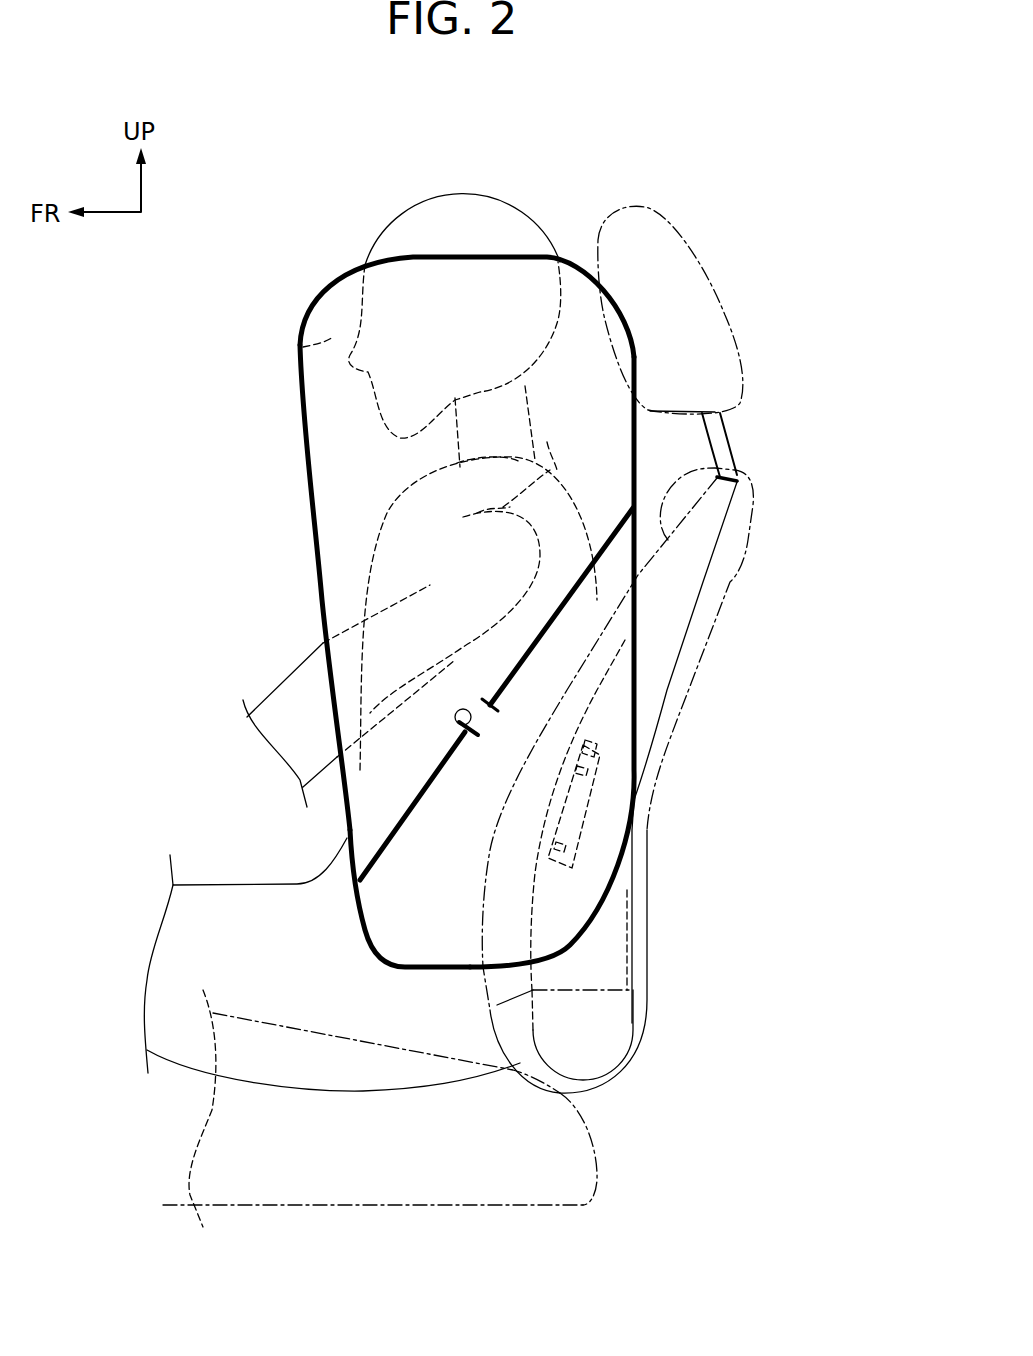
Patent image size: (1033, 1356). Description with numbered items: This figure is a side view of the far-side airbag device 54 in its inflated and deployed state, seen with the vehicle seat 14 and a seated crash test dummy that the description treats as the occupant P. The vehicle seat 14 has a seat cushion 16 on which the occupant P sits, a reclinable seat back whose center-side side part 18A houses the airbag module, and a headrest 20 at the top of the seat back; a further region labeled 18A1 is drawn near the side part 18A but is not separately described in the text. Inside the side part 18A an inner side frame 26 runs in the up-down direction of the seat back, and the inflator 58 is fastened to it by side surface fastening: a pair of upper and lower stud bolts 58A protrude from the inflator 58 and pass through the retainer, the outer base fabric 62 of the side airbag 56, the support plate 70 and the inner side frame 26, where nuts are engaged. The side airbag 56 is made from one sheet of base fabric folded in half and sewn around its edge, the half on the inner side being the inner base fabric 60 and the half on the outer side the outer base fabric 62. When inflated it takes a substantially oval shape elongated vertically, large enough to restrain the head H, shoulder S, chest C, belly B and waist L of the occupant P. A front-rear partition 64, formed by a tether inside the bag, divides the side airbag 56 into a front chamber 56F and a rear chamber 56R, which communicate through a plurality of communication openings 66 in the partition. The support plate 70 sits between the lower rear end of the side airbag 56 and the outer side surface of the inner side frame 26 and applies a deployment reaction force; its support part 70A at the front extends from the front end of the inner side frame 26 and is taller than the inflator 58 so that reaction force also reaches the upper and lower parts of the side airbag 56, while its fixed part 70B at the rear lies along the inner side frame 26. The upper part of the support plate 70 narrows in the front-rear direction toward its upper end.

The vehicle seat 14 is at (437, 1214).
The seat cushion 16 is at (322, 1205).
The side support part 18A is at (740, 552).
The upper portion of seat back 18A1 is at (655, 503).
The headrest 20 is at (657, 203).
The inner side frame 26 is at (623, 610).
The far-side airbag device 54 is at (250, 352).
The side airbag 56 is at (295, 427).
The front chamber 56F is at (298, 507).
The rear chamber 56R is at (470, 968).
The inflator 58 is at (597, 818).
The stud bolts 58A is at (582, 770).
The inner base fabric 60 is at (300, 343).
The outer base fabric 62 is at (453, 293).
The front-rear partition 64 is at (413, 820).
The communication openings 66 is at (460, 726).
The support plate 70 is at (680, 690).
The support part 70A is at (523, 827).
The fixed part 70B is at (577, 880).
The occupant P is at (390, 220).
The head H is at (443, 195).
The shoulder S is at (506, 428).
The chest C is at (367, 570).
The belly B is at (350, 790).
The waist L is at (367, 1005).